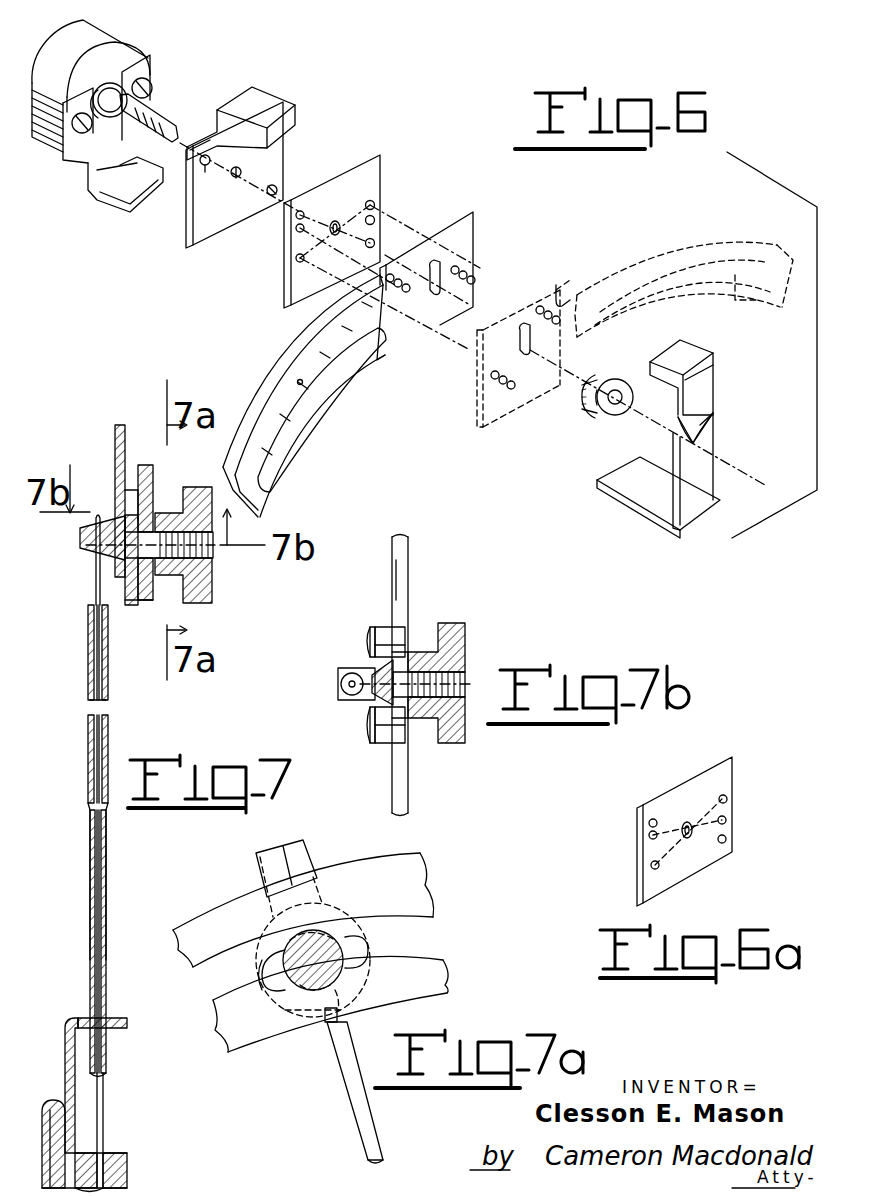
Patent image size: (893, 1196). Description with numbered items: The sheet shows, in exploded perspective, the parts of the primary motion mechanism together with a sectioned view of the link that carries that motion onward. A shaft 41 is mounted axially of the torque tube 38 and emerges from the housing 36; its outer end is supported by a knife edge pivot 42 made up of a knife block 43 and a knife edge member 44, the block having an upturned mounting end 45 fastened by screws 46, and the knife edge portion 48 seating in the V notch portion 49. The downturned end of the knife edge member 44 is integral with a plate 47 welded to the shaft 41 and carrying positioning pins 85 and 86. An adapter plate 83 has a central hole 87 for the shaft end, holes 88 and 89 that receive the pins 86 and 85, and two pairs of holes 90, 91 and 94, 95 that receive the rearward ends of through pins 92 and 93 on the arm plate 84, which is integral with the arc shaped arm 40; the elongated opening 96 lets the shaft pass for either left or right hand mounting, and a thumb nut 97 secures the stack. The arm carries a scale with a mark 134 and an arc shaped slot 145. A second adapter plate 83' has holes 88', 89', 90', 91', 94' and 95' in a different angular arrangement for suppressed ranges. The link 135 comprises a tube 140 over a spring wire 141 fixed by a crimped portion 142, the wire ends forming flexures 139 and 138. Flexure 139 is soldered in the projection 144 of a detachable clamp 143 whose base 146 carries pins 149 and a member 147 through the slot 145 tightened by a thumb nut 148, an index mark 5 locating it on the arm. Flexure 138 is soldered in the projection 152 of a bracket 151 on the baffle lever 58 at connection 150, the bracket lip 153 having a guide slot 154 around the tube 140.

In FIG. 6, the housing 36 is at (75, 40).
In FIG. 6, the torque tube 38 is at (112, 82).
In FIG. 6, the screws 46 is at (152, 85).
In FIG. 6, the shaft 41 is at (162, 128).
In FIG. 6, the upturned mounting end 45 is at (85, 152).
In FIG. 6, the knife block 43 is at (115, 192).
In FIG. 6, the knife edge member 44 is at (265, 97).
In FIG. 6, the positioning pin 86 is at (205, 168).
In FIG. 6, the plate 47 is at (195, 228).
In FIG. 6, the positioning pin 85 is at (275, 185).
In FIG. 6, the adapter plate 83 is at (356, 211).
In FIG. 6, the central hole 87 is at (336, 222).
In FIG. 6A, the central hole 87 is at (686, 822).
In FIG. 6, the hole 94 is at (405, 172).
In FIG. 6, the hole 91 is at (400, 207).
In FIG. 6, the hole 89 is at (392, 234).
In FIG. 6, the hole 88 is at (272, 229).
In FIG. 6, the hole 90 is at (274, 248).
In FIG. 6, the hole 95 is at (274, 281).
In FIG. 6, the arm plate 84 is at (474, 213).
In FIG. 6, the through pin 92 is at (405, 290).
In FIG. 6, the through pin 93 is at (473, 288).
In FIG. 6, the elongated opening 96 is at (436, 295).
In FIG. 6, the arm 40 is at (325, 420).
In FIG. 7, the arm 40 is at (145, 460).
In FIG. 7B, the arm 40 is at (410, 582).
In FIG. 7A, the arm 40 is at (228, 905).
In FIG. 6, the scale mark 134 is at (298, 380).
In FIG. 6, the arc shaped slot 145 is at (280, 460).
In FIG. 7, the arc shaped slot 145 is at (150, 495).
In FIG. 7B, the arc shaped slot 145 is at (405, 568).
In FIG. 7A, the arc shaped slot 145 is at (428, 903).
In FIG. 6, the thumb nut 97 is at (605, 412).
In FIG. 6, the V notch portion 49 is at (685, 442).
In FIG. 6, the knife edge portion 48 is at (700, 428).
In FIG. 6, the knife edge pivot 42 is at (700, 444).
In FIG. 7, the base 146 is at (128, 490).
In FIG. 7B, the base 146 is at (385, 625).
In FIG. 7A, the base 146 is at (318, 905).
In FIG. 7, the detachable clamp 143 is at (125, 500).
In FIG. 7B, the detachable clamp 143 is at (378, 625).
In FIG. 7A, the detachable clamp 143 is at (255, 975).
In FIG. 7, the projection 144 is at (82, 540).
In FIG. 7B, the projection 144 is at (372, 664).
In FIG. 7A, the projection 144 is at (338, 939).
In FIG. 7, the spring-wire flexure 139 is at (95, 582).
In FIG. 7A, the spring-wire flexure 139 is at (325, 1032).
In FIG. 7, the spring wire 141 is at (90, 608).
In FIG. 7B, the spring wire 141 is at (345, 688).
In FIG. 7A, the spring wire 141 is at (315, 1012).
In FIG. 7, the pins 149 is at (146, 605).
In FIG. 7B, the pins 149 is at (405, 628).
In FIG. 7A, the pins 149 is at (368, 953).
In FIG. 7, the member 147 is at (213, 560).
In FIG. 7B, the member 147 is at (465, 672).
In FIG. 7A, the member 147 is at (340, 975).
In FIG. 7, the thumb nut 148 is at (212, 604).
In FIG. 7B, the thumb nut 148 is at (462, 628).
In FIG. 7A, the thumb nut 148 is at (345, 990).
In FIG. 7, the tube 140 is at (88, 712).
In FIG. 7A, the tube 140 is at (375, 1158).
In FIG. 7, the crimped portion 142 is at (90, 808).
In FIG. 7, the link 135 is at (88, 880).
In FIG. 7A, the link 135 is at (350, 1126).
In FIG. 7, the guide slot 154 is at (108, 1018).
In FIG. 7, the lip 153 is at (70, 1020).
In FIG. 7, the bracket 151 is at (127, 1022).
In FIG. 7, the baffle lever 58 is at (54, 1105).
In FIG. 7, the spring-wire flexure 138 is at (104, 1115).
In FIG. 7, the connection 150 is at (108, 1153).
In FIG. 7, the projection 152 is at (127, 1170).
In FIG. 6A, the adapter plate 83' is at (716, 824).
In FIG. 6A, the hole 94' is at (757, 787).
In FIG. 6A, the hole 91' is at (756, 811).
In FIG. 6A, the hole 89' is at (756, 837).
In FIG. 6A, the hole 88' is at (623, 809).
In FIG. 6A, the hole 90' is at (618, 839).
In FIG. 6A, the hole 95' is at (625, 878).
In FIG. 7A, the index mark 5 is at (280, 858).